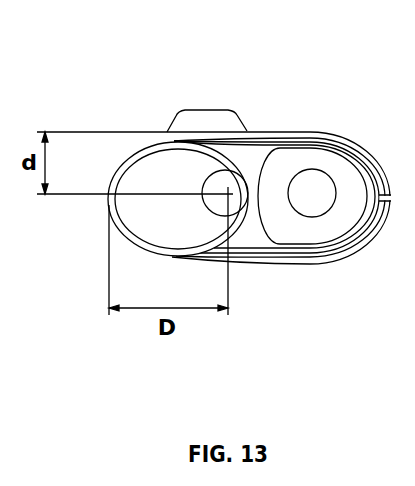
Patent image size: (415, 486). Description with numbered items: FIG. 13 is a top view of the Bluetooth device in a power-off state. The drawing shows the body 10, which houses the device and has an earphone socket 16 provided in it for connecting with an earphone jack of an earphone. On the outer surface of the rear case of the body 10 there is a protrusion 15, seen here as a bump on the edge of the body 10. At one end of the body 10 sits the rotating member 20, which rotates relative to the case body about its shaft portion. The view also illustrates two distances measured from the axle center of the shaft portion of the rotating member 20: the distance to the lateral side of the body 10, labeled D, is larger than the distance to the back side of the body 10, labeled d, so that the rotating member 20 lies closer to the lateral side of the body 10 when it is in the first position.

The body 10 is at (325, 223).
The protrusion 15 is at (198, 122).
The earphone socket 16 is at (313, 190).
The rotating member 20 is at (157, 172).